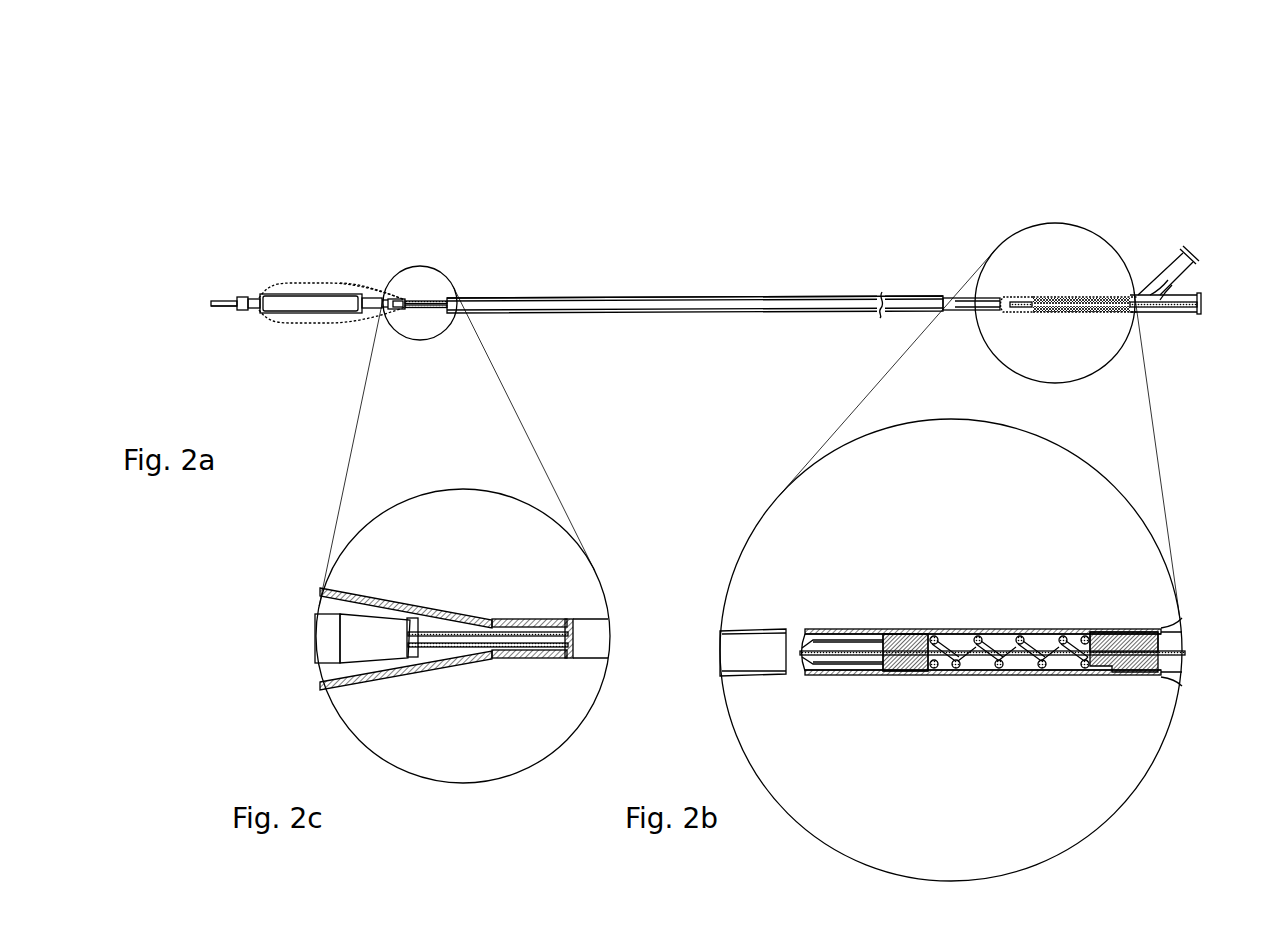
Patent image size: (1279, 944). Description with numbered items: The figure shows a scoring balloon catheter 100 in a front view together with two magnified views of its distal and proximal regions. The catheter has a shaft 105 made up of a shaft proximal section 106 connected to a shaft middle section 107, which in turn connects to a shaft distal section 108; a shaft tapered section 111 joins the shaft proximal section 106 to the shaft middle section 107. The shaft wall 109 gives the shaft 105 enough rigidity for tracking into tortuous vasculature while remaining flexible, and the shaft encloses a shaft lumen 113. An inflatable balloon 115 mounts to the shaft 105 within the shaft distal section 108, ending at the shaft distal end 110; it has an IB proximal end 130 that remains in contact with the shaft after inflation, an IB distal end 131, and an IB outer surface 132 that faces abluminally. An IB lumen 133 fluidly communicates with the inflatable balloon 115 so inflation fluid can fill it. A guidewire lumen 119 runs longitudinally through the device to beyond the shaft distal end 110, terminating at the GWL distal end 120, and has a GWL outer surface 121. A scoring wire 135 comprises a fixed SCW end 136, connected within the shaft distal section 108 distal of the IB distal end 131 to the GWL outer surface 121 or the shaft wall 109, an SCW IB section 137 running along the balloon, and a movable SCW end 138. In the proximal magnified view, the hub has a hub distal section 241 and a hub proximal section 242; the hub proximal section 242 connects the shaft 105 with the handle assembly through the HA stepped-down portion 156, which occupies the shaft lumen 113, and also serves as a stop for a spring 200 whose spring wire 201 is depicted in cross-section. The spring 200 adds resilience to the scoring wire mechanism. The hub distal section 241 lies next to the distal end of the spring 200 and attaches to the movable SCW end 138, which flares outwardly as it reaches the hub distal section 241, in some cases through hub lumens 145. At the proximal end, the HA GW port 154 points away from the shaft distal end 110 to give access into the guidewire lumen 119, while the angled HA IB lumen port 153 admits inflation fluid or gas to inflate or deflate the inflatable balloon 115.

In FIG. 2a, the scoring balloon catheter 100 is at (1078, 104).
In FIG. 2a, the shaft 105 is at (855, 238).
In FIG. 2a, the shaft proximal section 106 is at (1143, 264).
In FIG. 2a, the shaft middle section 107 is at (729, 273).
In FIG. 2a, the shaft distal section 108 is at (328, 256).
In FIG. 2b, the shaft wall 109 is at (810, 629).
In FIG. 2a, the shaft distal end 110 is at (245, 295).
In FIG. 2a, the shaft tapered section 111 is at (970, 308).
In FIG. 2b, the shaft lumen 113 is at (807, 677).
In FIG. 2a, the inflatable balloon 115 is at (347, 313).
In FIG. 2a, the guidewire lumen 119 is at (1174, 308).
In FIG. 2c, the guidewire lumen 119 is at (428, 636).
In FIG. 2b, the guidewire lumen 119 is at (1143, 649).
In FIG. 2a, the GWL distal end 120 is at (214, 299).
In FIG. 2a, the GWL outer surface 121 is at (229, 312).
In FIG. 2a, the IB proximal end 130 is at (398, 309).
In FIG. 2c, the IB proximal end 130 is at (368, 636).
In FIG. 2a, the IB distal end 131 is at (258, 313).
In FIG. 2a, the IB outer surface 132 is at (316, 316).
In FIG. 2a, the IB lumen 133 is at (1007, 308).
In FIG. 2a, the scoring wire 135 is at (410, 294).
In FIG. 2c, the scoring wire 135 is at (404, 682).
In FIG. 2a, the fixed SCW end 136 is at (251, 313).
In FIG. 2a, the SCW IB section 137 is at (357, 284).
In FIG. 2b, the movable SCW end 138 is at (893, 632).
In FIG. 2b, the hub lumens 145 is at (885, 675).
In FIG. 2a, the HA IB lumen port 153 is at (1192, 253).
In FIG. 2a, the HA GW port 154 is at (1214, 304).
In FIG. 2b, the HA stepped-down portion 156 is at (1105, 629).
In FIG. 2b, the spring 200 is at (995, 638).
In FIG. 2b, the spring wire 201 is at (995, 668).
In FIG. 2b, the hub distal section 241 is at (915, 672).
In FIG. 2b, the hub proximal section 242 is at (1138, 670).